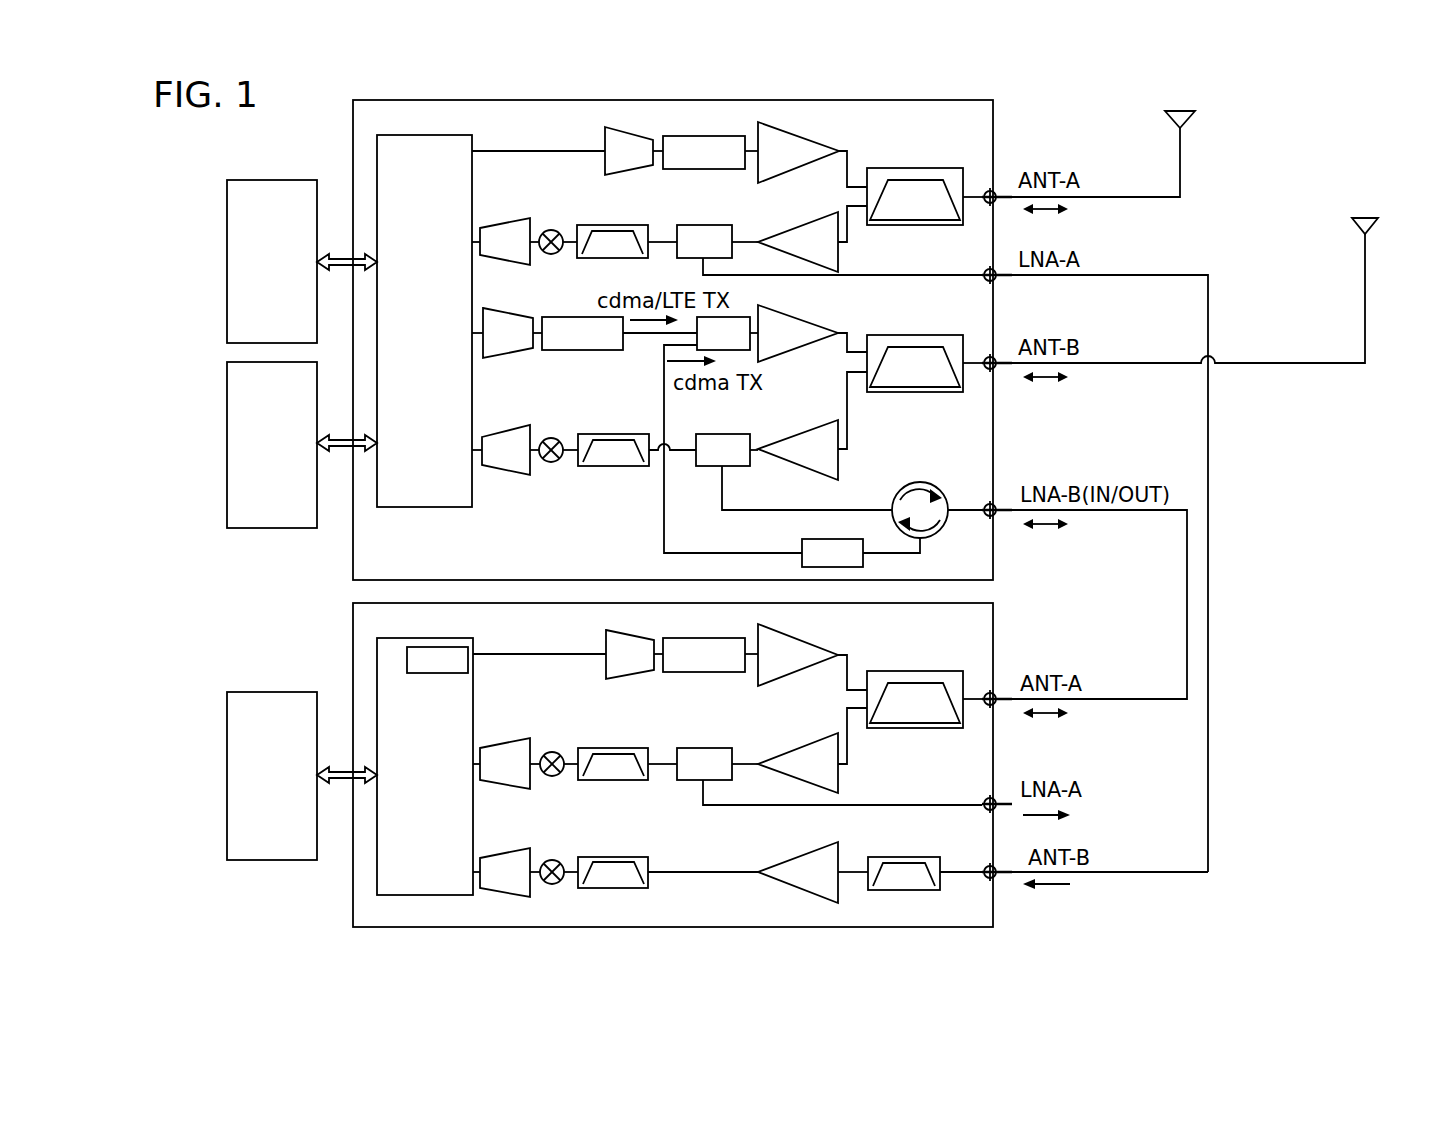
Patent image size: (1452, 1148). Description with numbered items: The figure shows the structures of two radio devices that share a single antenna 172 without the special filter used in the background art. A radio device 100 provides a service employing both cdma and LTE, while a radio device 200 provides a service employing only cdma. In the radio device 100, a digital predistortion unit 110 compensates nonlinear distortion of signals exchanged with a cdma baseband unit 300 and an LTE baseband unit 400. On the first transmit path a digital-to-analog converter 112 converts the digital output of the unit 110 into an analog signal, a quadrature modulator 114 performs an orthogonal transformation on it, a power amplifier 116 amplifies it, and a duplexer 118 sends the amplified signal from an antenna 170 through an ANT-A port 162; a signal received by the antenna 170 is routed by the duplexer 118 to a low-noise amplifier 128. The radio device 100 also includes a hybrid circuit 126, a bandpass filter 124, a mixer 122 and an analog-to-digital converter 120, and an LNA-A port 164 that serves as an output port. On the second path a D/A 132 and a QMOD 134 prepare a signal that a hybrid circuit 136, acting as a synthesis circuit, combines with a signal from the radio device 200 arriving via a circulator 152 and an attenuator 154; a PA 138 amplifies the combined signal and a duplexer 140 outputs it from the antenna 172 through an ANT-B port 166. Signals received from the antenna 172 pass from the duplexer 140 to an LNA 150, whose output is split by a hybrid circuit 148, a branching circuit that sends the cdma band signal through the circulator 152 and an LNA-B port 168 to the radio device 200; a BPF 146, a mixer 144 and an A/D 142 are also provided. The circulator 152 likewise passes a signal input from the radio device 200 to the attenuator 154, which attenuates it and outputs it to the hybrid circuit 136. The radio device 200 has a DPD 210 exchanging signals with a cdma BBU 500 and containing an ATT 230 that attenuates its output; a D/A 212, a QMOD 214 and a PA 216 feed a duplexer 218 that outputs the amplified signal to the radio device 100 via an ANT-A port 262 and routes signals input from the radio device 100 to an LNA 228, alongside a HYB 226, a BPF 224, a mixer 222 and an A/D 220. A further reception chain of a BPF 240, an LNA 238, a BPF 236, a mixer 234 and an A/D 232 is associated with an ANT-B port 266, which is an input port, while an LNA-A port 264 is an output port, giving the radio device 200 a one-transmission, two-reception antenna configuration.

The radio device 100 is at (993, 103).
The digital predistortion unit 110 is at (468, 135).
The digital-to-analog converter 112 is at (625, 175).
The quadrature modulator 114 is at (700, 169).
The power amplifier 116 is at (826, 148).
The duplexer 118 is at (918, 168).
The analog-to-digital converter 120 is at (492, 228).
The mixer 122 is at (553, 254).
The bandpass filter 124 is at (585, 225).
The hybrid circuit 126 is at (688, 225).
The low-noise amplifier 128 is at (770, 230).
The digital-to-analog converter 132 is at (510, 358).
The quadrature modulator 134 is at (580, 317).
The hybrid circuit 136 is at (748, 310).
The power amplifier 138 is at (806, 322).
The duplexer 140 is at (920, 335).
The analog-to-digital converter 142 is at (490, 465).
The mixer 144 is at (551, 462).
The bandpass filter 146 is at (586, 434).
The hybrid circuit 148 is at (706, 434).
The low-noise amplifier 150 is at (766, 440).
The circulator 152 is at (938, 535).
The attenuator 154 is at (802, 546).
The ANT-A port 162 is at (994, 206).
The LNA-A port 164 is at (994, 284).
The ANT-B port 166 is at (994, 372).
The LNA-B port 168 is at (994, 519).
The antenna 170 is at (1182, 143).
The antenna 172 is at (1367, 243).
The radio device 200 is at (993, 606).
The digital predistortion unit 210 is at (460, 638).
The digital-to-analog converter 212 is at (625, 679).
The quadrature modulator 214 is at (700, 672).
The power amplifier 216 is at (826, 650).
The duplexer 218 is at (918, 671).
The analog-to-digital converter 220 is at (490, 780).
The mixer 222 is at (554, 776).
The bandpass filter 224 is at (630, 780).
The hybrid circuit 226 is at (716, 780).
The low-noise amplifier 228 is at (838, 780).
The attenuator 230 is at (473, 665).
The analog-to-digital converter 232 is at (493, 858).
The mixer 234 is at (552, 884).
The bandpass filter 236 is at (590, 857).
The low-noise amplifier 238 is at (775, 865).
The bandpass filter 240 is at (884, 840).
The ANT-A port 262 is at (994, 708).
The LNA-A port 264 is at (994, 813).
The ANT-B port 266 is at (994, 881).
The cdma baseband unit 300 is at (290, 180).
The LTE baseband unit 400 is at (276, 528).
The cdma baseband unit 500 is at (285, 692).